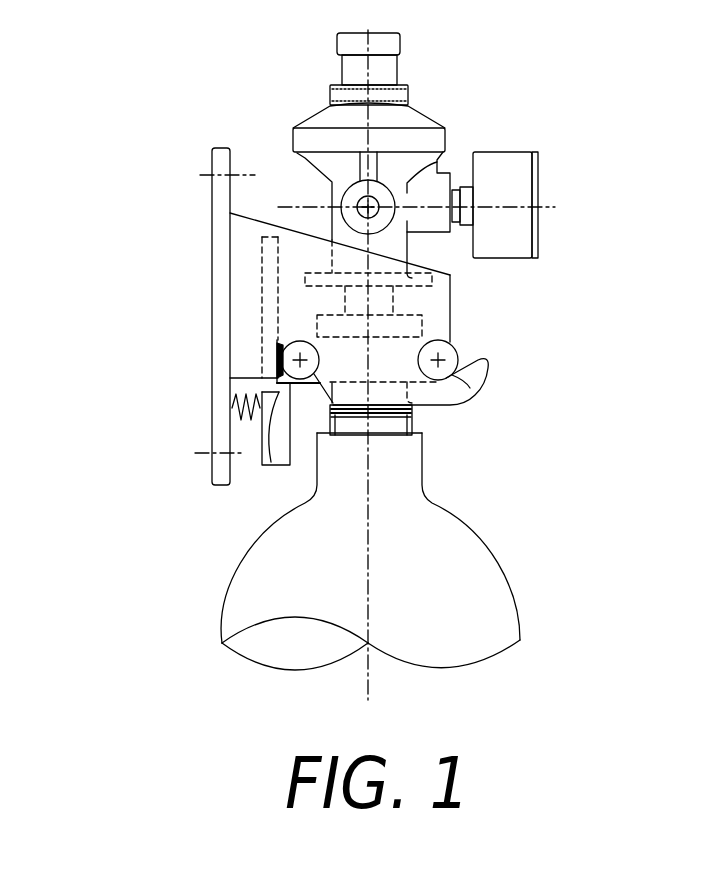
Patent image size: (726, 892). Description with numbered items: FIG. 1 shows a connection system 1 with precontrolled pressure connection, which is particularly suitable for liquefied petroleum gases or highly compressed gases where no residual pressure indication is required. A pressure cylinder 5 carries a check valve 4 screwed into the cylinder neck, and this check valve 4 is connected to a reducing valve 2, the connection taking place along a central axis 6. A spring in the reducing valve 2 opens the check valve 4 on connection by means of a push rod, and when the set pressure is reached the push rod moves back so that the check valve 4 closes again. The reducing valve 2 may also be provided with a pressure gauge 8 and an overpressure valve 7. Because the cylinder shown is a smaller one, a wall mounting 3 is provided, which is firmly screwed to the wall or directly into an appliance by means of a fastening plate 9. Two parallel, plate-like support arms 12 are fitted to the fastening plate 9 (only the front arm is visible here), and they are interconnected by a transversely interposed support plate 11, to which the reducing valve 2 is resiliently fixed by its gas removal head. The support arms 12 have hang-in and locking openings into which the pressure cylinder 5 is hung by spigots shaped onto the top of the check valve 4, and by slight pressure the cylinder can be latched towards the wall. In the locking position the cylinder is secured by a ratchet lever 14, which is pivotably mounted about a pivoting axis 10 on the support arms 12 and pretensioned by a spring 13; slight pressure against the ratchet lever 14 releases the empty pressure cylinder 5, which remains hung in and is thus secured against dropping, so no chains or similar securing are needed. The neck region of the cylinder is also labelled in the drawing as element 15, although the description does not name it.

The connection system 1 is at (540, 317).
The reducing valve 2 is at (447, 74).
The wall mounting 3 is at (188, 303).
The check valve 4 is at (393, 420).
The pressure cylinder 5 is at (488, 596).
The central axis 6 is at (368, 583).
The overpressure valve 7 is at (368, 207).
The pressure gauge 8 is at (502, 167).
The fastening plate 9 is at (222, 200).
The pivoting axis 10 is at (278, 240).
The support plate 11 is at (450, 275).
The support arms 12 is at (473, 386).
The spring 13 is at (232, 407).
The ratchet lever 14 is at (272, 460).
The cylinder neck 15 is at (403, 470).